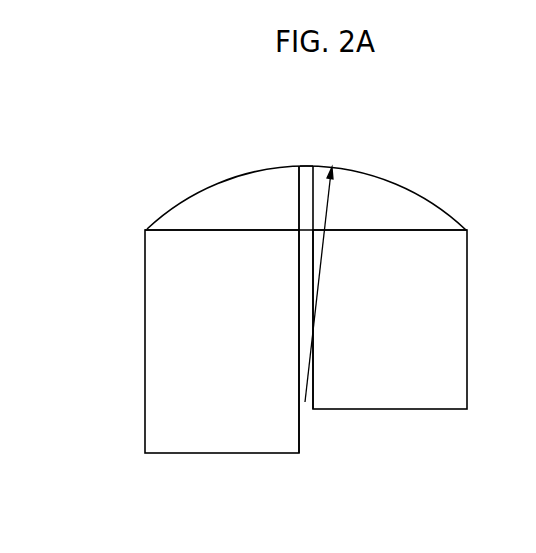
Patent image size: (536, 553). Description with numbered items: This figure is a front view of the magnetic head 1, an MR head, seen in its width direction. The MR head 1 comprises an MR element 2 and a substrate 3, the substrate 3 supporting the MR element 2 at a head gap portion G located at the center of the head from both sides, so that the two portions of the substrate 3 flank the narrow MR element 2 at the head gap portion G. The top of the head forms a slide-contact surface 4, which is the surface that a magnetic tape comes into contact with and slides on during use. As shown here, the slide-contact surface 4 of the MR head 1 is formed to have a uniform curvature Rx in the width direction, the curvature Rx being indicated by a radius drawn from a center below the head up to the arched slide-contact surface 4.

The magnetic head 1 is at (153, 212).
The MR element 2 is at (306, 165).
The substrate 3 is at (226, 200).
The slide-contact surface 4 is at (366, 172).
The head gap portion G is at (298, 190).
The curvature in width direction Rx is at (322, 243).